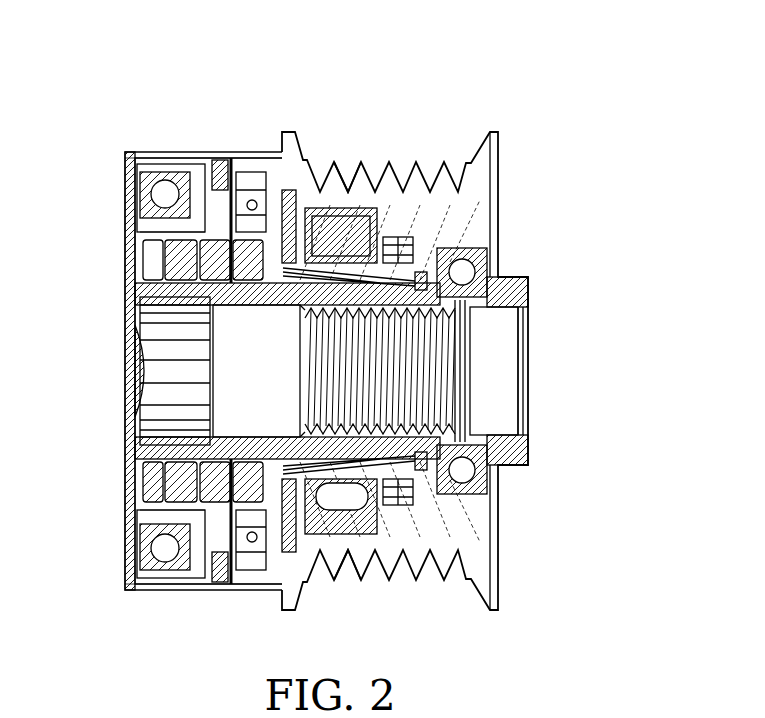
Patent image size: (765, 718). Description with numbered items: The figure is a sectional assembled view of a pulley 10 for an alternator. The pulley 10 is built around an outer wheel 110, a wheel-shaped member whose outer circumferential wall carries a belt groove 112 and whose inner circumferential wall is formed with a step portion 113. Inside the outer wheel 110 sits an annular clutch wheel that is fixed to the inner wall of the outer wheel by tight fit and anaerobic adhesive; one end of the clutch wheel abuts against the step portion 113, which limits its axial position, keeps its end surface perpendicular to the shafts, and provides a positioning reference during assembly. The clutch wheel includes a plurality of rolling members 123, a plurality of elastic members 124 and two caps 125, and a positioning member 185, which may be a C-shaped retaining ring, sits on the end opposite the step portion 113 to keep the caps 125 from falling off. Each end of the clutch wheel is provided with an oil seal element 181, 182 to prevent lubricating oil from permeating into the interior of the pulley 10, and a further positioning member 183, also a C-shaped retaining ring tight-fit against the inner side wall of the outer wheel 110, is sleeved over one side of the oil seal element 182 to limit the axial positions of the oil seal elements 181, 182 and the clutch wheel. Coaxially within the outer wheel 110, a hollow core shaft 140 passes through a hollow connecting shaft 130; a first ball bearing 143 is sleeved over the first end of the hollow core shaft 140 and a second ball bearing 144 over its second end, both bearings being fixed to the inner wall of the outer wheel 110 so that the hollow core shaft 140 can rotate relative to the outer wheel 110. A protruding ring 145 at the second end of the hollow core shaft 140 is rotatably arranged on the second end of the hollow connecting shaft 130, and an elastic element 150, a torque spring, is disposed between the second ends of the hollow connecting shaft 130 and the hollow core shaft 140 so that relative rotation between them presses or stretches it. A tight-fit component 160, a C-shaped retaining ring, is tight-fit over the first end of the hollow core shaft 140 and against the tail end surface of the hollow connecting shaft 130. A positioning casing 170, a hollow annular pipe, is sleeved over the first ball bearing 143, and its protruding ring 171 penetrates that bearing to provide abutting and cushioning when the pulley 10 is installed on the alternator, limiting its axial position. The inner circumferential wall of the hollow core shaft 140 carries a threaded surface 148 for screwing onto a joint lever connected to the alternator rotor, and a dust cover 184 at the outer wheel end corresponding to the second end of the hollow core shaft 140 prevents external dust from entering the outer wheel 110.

The pulley 10 is at (604, 140).
The outer wheel 110 is at (240, 146).
The belt groove 112 is at (443, 162).
The step portion 113 is at (352, 178).
The rolling members 123 is at (349, 578).
The elastic members 124 is at (342, 510).
The caps 125 is at (336, 208).
The hollow connecting shaft 130 is at (200, 152).
The hollow core shaft 140 is at (165, 294).
The first ball bearing 143 is at (468, 272).
The second ball bearing 144 is at (148, 184).
The protruding ring 145 is at (165, 227).
The threaded surface 148 is at (437, 355).
The elastic element 150 is at (155, 482).
The tight-fit component 160 is at (408, 247).
The positioning casing 170 is at (503, 462).
The protruding ring 171 is at (468, 445).
The oil seal element 181 is at (420, 272).
The oil seal element 182 is at (260, 172).
The positioning member 183 is at (228, 158).
The dust cover 184 is at (165, 258).
The positioning member 185 is at (288, 197).